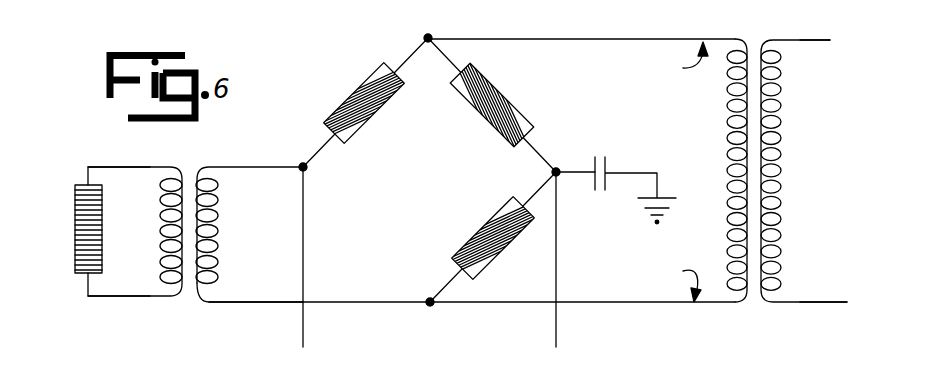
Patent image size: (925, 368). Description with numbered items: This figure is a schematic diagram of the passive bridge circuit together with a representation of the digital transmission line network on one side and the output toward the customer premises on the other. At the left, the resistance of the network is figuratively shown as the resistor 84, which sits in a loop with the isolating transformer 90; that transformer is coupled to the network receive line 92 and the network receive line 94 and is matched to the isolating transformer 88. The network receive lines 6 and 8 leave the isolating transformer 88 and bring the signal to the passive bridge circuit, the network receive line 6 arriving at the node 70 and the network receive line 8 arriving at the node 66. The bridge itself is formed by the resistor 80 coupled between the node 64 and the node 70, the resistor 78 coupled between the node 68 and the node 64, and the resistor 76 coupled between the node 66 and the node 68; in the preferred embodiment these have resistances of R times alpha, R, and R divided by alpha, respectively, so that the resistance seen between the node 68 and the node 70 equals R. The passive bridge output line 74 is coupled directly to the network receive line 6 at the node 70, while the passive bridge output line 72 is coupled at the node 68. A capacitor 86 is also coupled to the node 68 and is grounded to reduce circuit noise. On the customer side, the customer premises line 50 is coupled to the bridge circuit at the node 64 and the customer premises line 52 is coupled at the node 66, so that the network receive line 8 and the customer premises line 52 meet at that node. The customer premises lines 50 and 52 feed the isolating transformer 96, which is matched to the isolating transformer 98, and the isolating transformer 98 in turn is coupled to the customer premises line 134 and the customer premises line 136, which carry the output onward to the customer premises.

The network receive line 6 is at (243, 167).
The network receive line 8 is at (270, 302).
The customer premises line 50 is at (674, 61).
The customer premises line 52 is at (670, 281).
The node 64 is at (429, 36).
The node 66 is at (430, 301).
The node 68 is at (558, 170).
The node 70 is at (306, 168).
The passive bridge output line 72 is at (558, 325).
The passive bridge output line 74 is at (305, 326).
The resistor 76 is at (501, 246).
The resistor 78 is at (498, 100).
The resistor 80 is at (362, 96).
The resistor 84 is at (75, 219).
The capacitor 86 is at (607, 165).
The isolating transformer 88 is at (218, 217).
The isolating transformer 90 is at (166, 218).
The network receive line 92 is at (146, 167).
The network receive line 94 is at (128, 297).
The isolating transformer 96 is at (735, 122).
The isolating transformer 98 is at (782, 155).
The customer premises line 134 is at (818, 40).
The customer premises line 136 is at (811, 304).